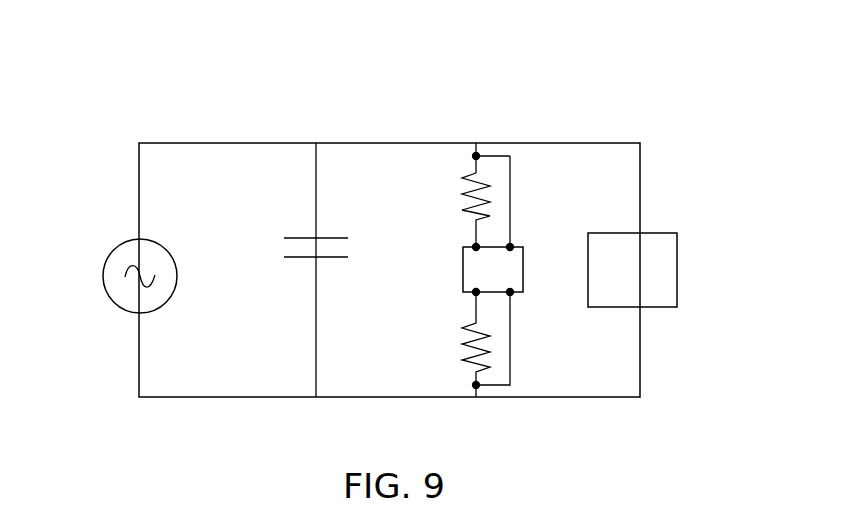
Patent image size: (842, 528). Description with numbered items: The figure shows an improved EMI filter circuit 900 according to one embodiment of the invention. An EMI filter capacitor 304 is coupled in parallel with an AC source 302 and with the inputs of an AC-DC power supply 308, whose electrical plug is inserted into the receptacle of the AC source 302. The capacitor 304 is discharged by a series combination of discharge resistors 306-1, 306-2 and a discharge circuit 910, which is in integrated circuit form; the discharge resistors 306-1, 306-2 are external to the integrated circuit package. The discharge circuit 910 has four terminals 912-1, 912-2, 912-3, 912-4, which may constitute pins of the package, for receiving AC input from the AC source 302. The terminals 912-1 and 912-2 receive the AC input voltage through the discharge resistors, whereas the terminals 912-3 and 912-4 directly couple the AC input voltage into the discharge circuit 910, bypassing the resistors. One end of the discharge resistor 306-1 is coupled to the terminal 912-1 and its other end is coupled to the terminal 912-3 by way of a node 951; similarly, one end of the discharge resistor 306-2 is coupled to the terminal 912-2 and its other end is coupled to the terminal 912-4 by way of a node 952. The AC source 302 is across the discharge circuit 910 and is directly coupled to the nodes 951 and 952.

The EMI filter circuit 900 is at (236, 86).
The AC source 302 is at (103, 270).
The EMI filter capacitor 304 is at (277, 250).
The discharge resistor 306-1 is at (460, 190).
The discharge resistor 306-2 is at (460, 352).
The AC-DC power supply 308 is at (679, 257).
The discharge circuit 910 is at (463, 270).
The terminal 912-1 is at (473, 247).
The terminal 912-2 is at (473, 294).
The terminal 912-3 is at (512, 246).
The terminal 912-4 is at (513, 295).
The node 951 is at (476, 156).
The node 952 is at (478, 388).